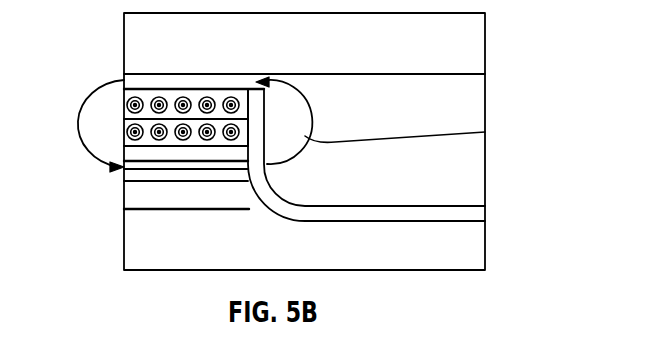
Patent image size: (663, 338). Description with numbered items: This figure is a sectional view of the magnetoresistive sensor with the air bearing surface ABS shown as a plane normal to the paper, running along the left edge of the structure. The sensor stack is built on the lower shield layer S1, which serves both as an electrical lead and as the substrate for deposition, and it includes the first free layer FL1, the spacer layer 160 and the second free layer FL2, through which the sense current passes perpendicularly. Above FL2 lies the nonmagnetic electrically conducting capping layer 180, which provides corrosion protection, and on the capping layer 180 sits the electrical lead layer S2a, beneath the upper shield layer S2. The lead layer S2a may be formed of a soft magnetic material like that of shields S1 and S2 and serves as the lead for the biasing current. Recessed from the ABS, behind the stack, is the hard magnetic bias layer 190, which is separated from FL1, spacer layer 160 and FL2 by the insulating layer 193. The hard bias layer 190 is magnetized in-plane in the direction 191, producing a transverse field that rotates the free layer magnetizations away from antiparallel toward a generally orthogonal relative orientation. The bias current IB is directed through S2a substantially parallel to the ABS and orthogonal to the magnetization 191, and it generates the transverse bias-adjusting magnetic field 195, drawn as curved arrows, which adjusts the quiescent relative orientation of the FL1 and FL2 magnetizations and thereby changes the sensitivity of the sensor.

The spacer layer 160 is at (181, 164).
The capping layer 180 is at (224, 120).
The hard magnetic bias layer 190 is at (470, 192).
The magnetization of hard bias layer 191 is at (326, 168).
The insulating layer 193 is at (375, 213).
The bias-adjusting magnetic field 195 is at (73, 104).
The first free layer FL1 is at (133, 173).
The second free layer FL2 is at (223, 153).
The lower shield layer S1 is at (472, 245).
The upper shield layer S2 is at (470, 33).
The electrical lead layer S2a is at (228, 96).
The air bearing surface ABS is at (123, 262).
The bias current IB is at (179, 98).